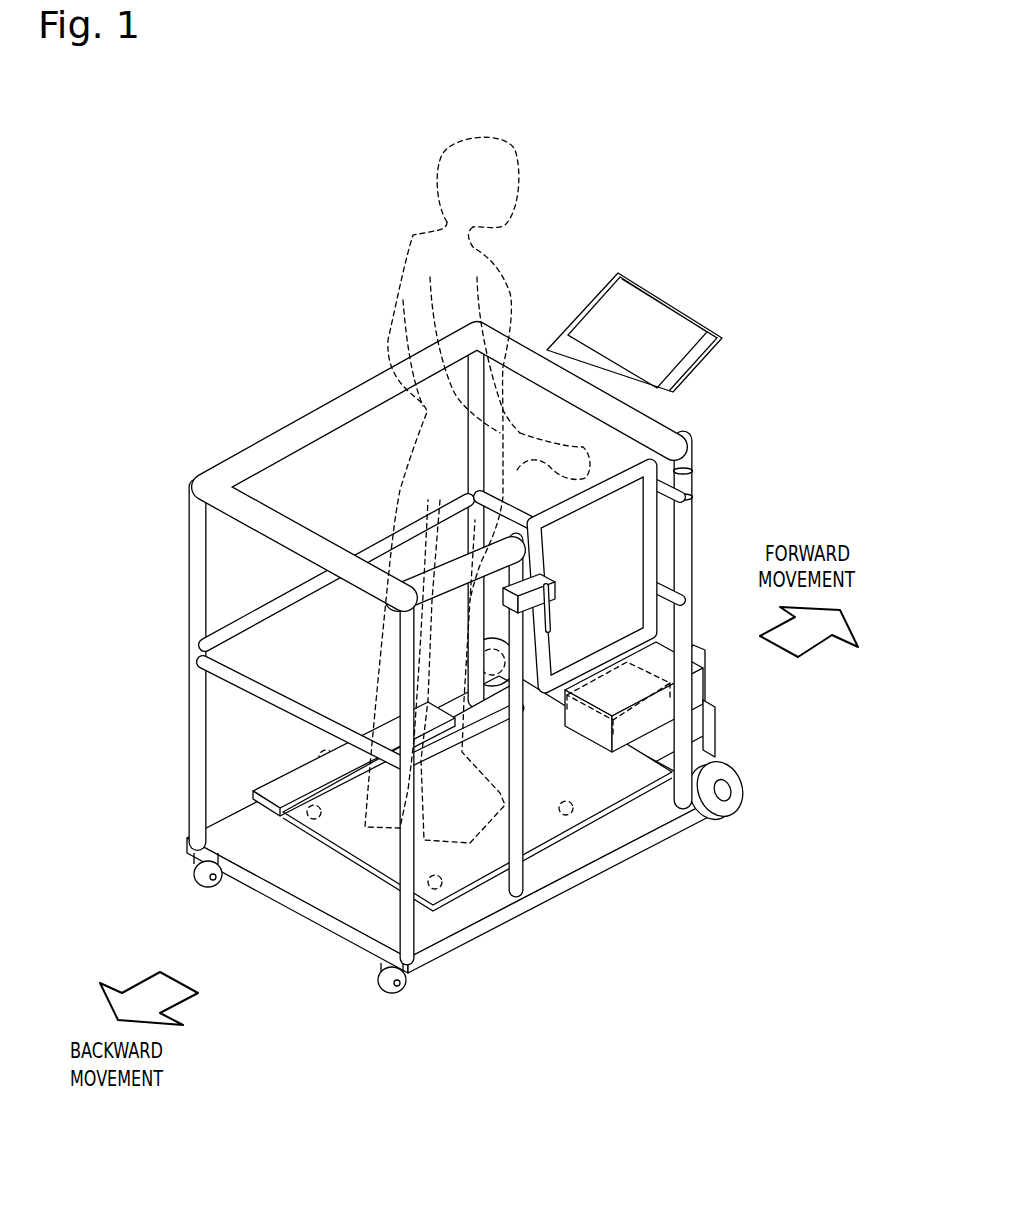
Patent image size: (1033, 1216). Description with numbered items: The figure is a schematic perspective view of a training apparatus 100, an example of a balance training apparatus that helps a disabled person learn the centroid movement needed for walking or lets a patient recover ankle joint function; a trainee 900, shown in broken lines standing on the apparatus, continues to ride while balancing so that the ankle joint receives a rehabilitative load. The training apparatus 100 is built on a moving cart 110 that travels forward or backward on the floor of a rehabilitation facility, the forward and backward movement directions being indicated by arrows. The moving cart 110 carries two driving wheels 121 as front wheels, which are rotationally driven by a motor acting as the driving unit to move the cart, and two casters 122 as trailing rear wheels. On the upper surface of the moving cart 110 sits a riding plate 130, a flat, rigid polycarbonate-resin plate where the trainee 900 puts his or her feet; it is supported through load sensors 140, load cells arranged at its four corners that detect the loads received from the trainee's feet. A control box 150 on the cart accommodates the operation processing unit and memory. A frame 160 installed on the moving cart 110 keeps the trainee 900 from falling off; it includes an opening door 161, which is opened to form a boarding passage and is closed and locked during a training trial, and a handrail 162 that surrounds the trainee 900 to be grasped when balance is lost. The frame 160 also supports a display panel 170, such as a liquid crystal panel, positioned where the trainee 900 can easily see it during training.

The training apparatus 100 is at (258, 357).
The moving cart 110 is at (528, 903).
The driving wheels 121 is at (490, 651).
The casters 122 is at (198, 889).
The riding plate 130 is at (367, 845).
The load sensors 140 is at (298, 821).
The control box 150 is at (572, 722).
The frame 160 is at (196, 598).
The opening door 161 is at (545, 661).
The handrail 162 is at (256, 448).
The display panel 170 is at (665, 318).
The trainee 900 is at (516, 130).